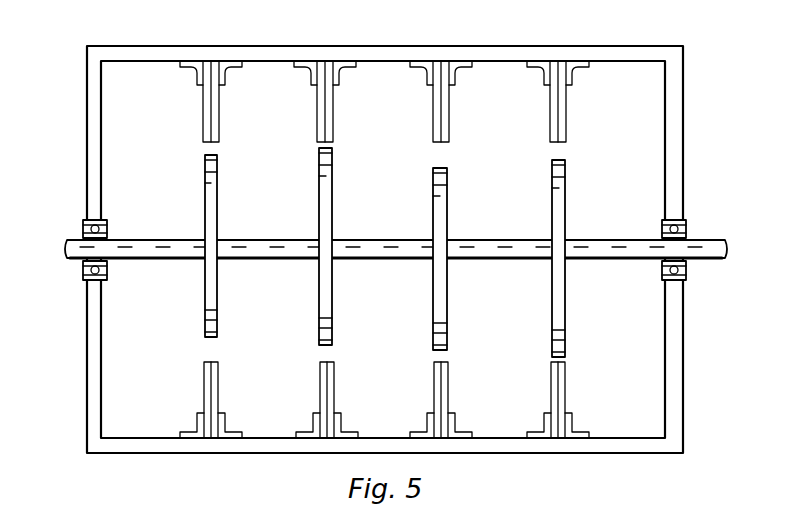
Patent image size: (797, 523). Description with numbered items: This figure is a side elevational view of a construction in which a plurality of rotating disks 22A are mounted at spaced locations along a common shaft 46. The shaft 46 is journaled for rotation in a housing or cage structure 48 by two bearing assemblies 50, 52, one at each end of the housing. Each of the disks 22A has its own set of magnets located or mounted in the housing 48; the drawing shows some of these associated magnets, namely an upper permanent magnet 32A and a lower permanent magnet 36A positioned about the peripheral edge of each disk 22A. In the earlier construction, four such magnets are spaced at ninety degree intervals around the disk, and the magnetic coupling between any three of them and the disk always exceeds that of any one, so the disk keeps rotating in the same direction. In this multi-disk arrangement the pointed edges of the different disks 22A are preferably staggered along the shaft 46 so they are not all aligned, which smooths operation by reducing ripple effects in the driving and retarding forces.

The housing or cage structure 48 is at (641, 47).
The shaft 46 is at (250, 250).
The bearing assembly 50 is at (83, 227).
The bearing assembly 52 is at (687, 226).
The disk 22A is at (215, 178).
The permanent magnet 32A is at (437, 104).
The permanent magnet 36A is at (440, 378).